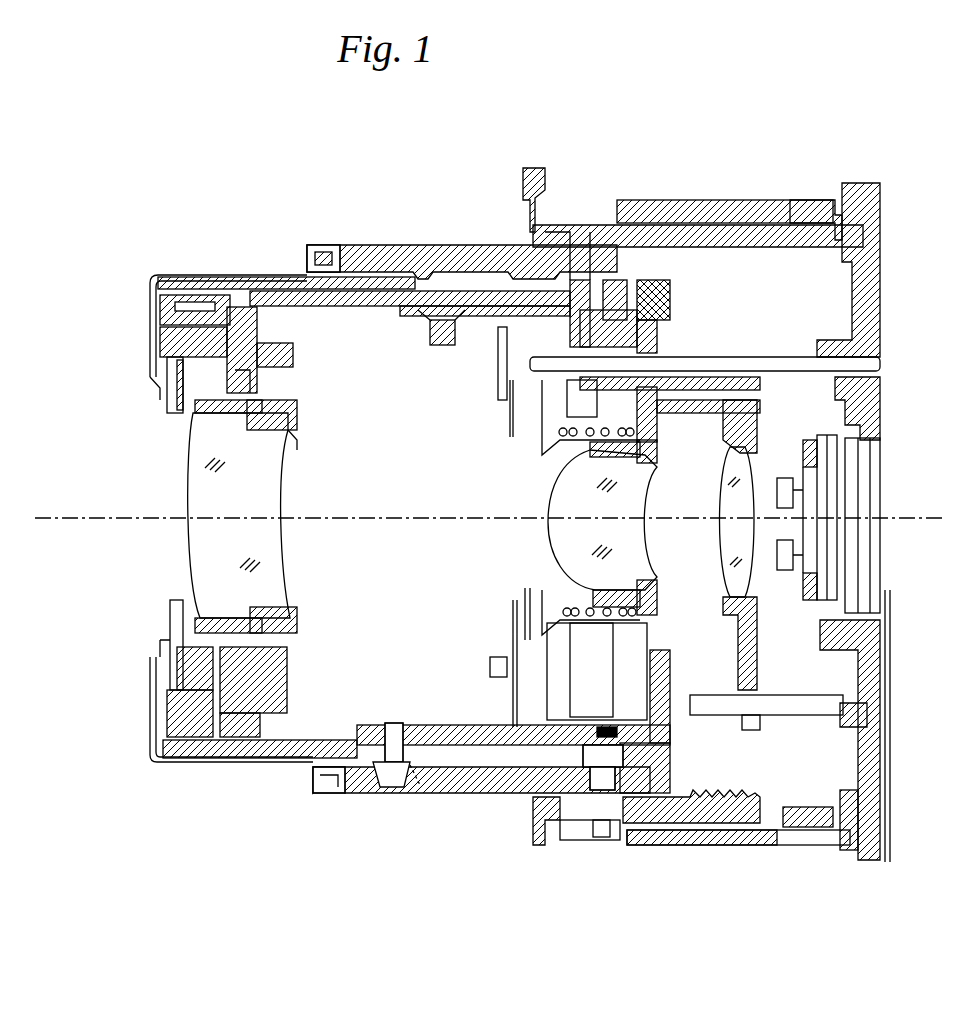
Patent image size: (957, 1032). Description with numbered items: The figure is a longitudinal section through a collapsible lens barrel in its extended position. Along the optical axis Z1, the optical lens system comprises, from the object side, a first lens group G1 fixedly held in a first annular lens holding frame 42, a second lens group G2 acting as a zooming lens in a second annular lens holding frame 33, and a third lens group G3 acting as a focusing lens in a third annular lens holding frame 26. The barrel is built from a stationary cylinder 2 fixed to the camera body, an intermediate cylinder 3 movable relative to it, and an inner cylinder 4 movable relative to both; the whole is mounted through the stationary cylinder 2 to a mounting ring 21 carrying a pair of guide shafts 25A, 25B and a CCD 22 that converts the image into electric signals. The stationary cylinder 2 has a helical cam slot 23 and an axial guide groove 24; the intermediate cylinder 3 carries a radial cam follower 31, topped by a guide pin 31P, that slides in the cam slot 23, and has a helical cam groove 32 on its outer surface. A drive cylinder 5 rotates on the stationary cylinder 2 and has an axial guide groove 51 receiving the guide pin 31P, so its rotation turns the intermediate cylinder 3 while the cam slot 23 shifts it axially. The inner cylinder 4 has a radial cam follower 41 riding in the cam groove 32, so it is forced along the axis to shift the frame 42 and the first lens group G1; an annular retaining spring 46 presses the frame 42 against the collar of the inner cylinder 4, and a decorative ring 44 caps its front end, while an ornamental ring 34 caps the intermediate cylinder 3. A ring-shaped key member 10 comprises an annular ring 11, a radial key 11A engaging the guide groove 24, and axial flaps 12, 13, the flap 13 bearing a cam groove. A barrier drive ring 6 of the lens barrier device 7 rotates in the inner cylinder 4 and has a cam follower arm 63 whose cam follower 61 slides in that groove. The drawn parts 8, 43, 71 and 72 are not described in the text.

The stationary cylinder 2 is at (540, 165).
The intermediate cylinder 3 is at (385, 245).
The inner cylinder 4 is at (235, 275).
The drive cylinder 5 is at (720, 200).
The barrier drive ring 6 is at (410, 357).
The lens barrier device 7 is at (122, 400).
The decorative ring 8 is at (160, 318).
The ring-shaped key member 10 is at (483, 290).
The annular ring 11 is at (670, 275).
The radial key 11A is at (665, 222).
The axial flap 12 is at (455, 723).
The axial flap 13 is at (470, 318).
The mounting ring 21 is at (880, 265).
The charge coupled device (CCD) 22 is at (880, 470).
The cam slot 23 is at (655, 845).
The axial guide groove 24 is at (775, 200).
The guide shaft 25A is at (798, 715).
The guide shaft 25B is at (787, 357).
The third annular lens holding frame 26 is at (757, 645).
The radial cam follower 31 is at (580, 845).
The guide pin 31P is at (605, 840).
The helical cam groove 32 is at (420, 790).
The second annular lens holding frame 33 is at (657, 452).
The annular ornamental ring 34 is at (322, 243).
The radial cam follower 41 is at (395, 787).
The first annular lens holding frame 42 is at (292, 438).
The inner frame 43 is at (160, 348).
The ornamental decorative annular ring 44 is at (165, 270).
The annular retaining spring 46 is at (177, 652).
The axial guide groove 51 is at (725, 830).
The cam follower 61 is at (415, 330).
The cam follower arm 63 is at (370, 308).
The barrier blade 71 is at (177, 420).
The barrier blade 72 is at (167, 405).
The first lens group G1 is at (195, 545).
The second lens group G2 is at (555, 545).
The third lens group G3 is at (725, 545).
The optical axis Z1 is at (63, 520).